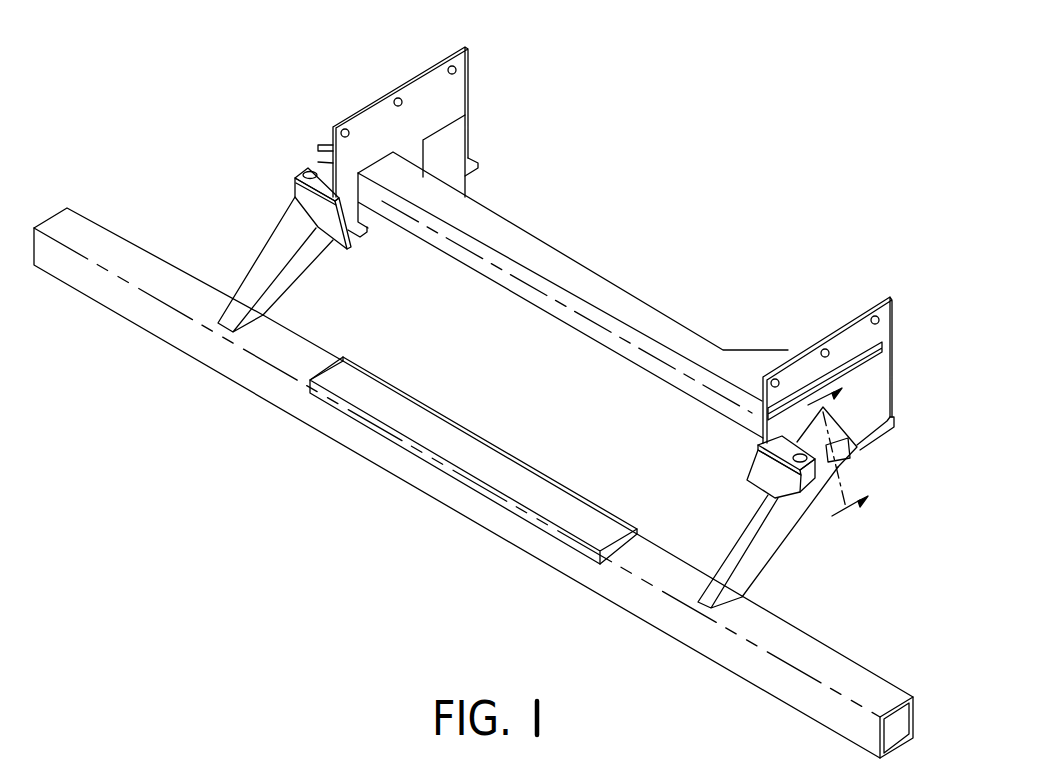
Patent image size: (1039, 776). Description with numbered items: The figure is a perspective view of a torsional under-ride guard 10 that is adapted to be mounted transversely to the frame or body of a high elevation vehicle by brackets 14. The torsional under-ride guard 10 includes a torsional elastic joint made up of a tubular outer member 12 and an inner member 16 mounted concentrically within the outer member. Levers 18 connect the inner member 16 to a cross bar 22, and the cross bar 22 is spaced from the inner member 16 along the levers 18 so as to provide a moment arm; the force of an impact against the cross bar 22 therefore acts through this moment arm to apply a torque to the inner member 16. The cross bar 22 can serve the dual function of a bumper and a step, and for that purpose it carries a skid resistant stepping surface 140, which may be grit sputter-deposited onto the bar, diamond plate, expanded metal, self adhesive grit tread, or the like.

The torsional under-ride guard 10 is at (473, 402).
The tubular outer member 12 is at (586, 256).
The brackets 14 is at (464, 87).
The inner member 16 is at (846, 452).
The levers 18 is at (796, 530).
The cross bar 22 is at (657, 620).
The skid resistant stepping surface 140 is at (463, 455).